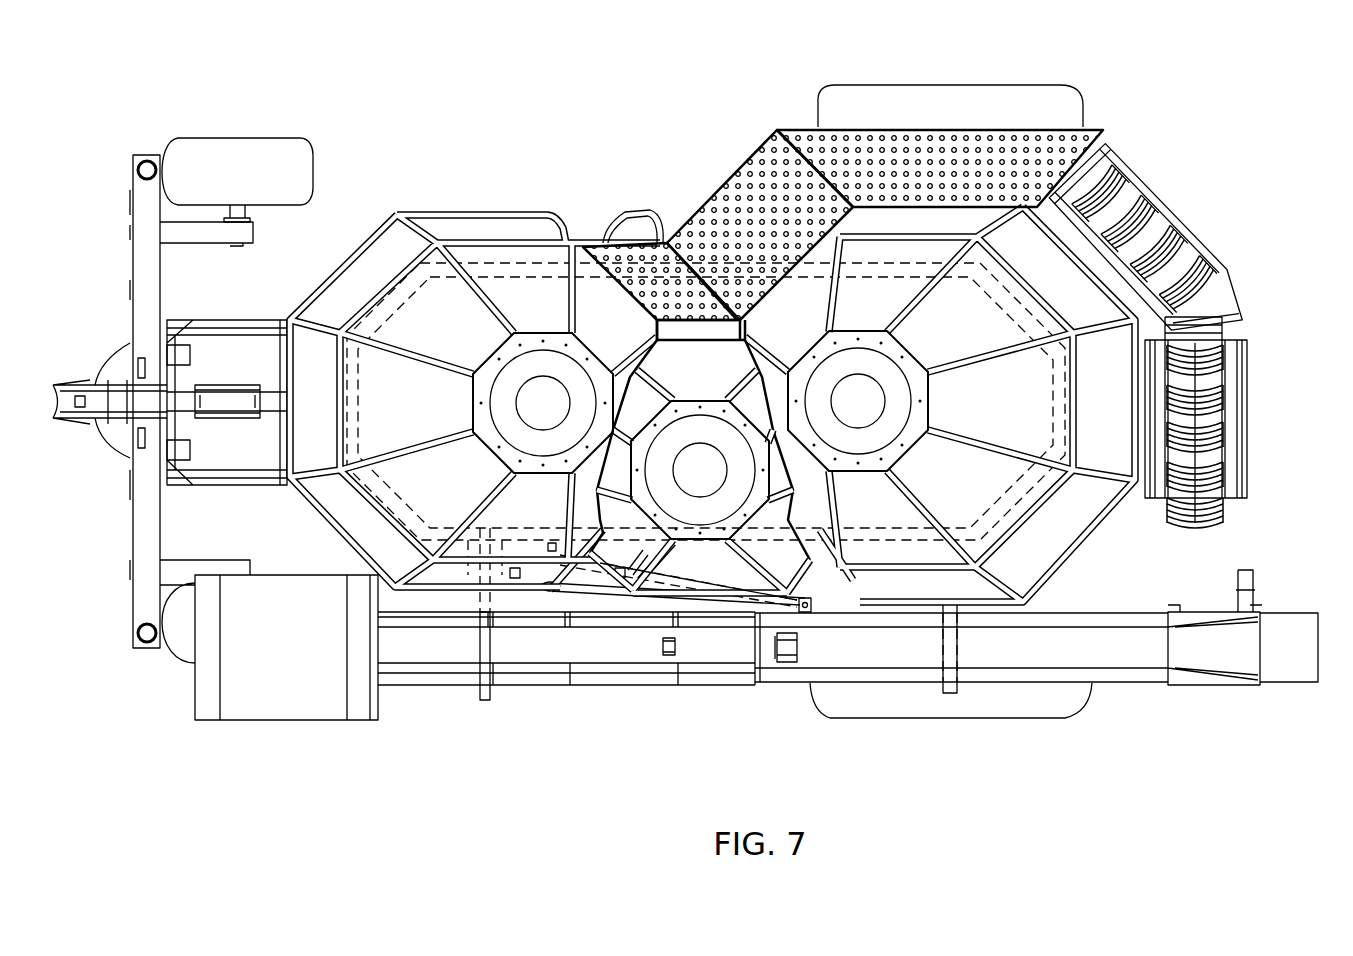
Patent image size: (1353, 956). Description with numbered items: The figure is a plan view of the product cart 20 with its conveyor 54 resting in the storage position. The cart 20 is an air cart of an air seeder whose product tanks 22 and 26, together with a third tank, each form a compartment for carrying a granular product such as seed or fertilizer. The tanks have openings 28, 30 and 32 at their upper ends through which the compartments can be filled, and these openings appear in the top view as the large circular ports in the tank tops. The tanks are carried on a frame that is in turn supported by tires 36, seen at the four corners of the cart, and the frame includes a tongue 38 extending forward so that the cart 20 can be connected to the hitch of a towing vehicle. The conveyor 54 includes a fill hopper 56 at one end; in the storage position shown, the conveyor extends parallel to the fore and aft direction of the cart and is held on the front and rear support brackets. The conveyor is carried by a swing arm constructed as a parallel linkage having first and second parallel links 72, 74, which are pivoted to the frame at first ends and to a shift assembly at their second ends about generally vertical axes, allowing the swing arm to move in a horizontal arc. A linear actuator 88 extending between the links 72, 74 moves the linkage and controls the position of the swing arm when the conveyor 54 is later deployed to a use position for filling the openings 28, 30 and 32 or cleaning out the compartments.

The product cart 20 is at (685, 434).
The product tank 22 is at (467, 218).
The product tank 26 is at (1082, 525).
The opening 28 is at (498, 352).
The opening 30 is at (705, 415).
The opening 32 is at (905, 350).
The tires 36 is at (307, 152).
The tongue 38 is at (88, 388).
The conveyor 54 is at (550, 690).
The fill hopper 56 is at (294, 715).
The first parallel link 72 is at (783, 603).
The second parallel link 74 is at (600, 595).
The linear actuator 88 is at (697, 607).